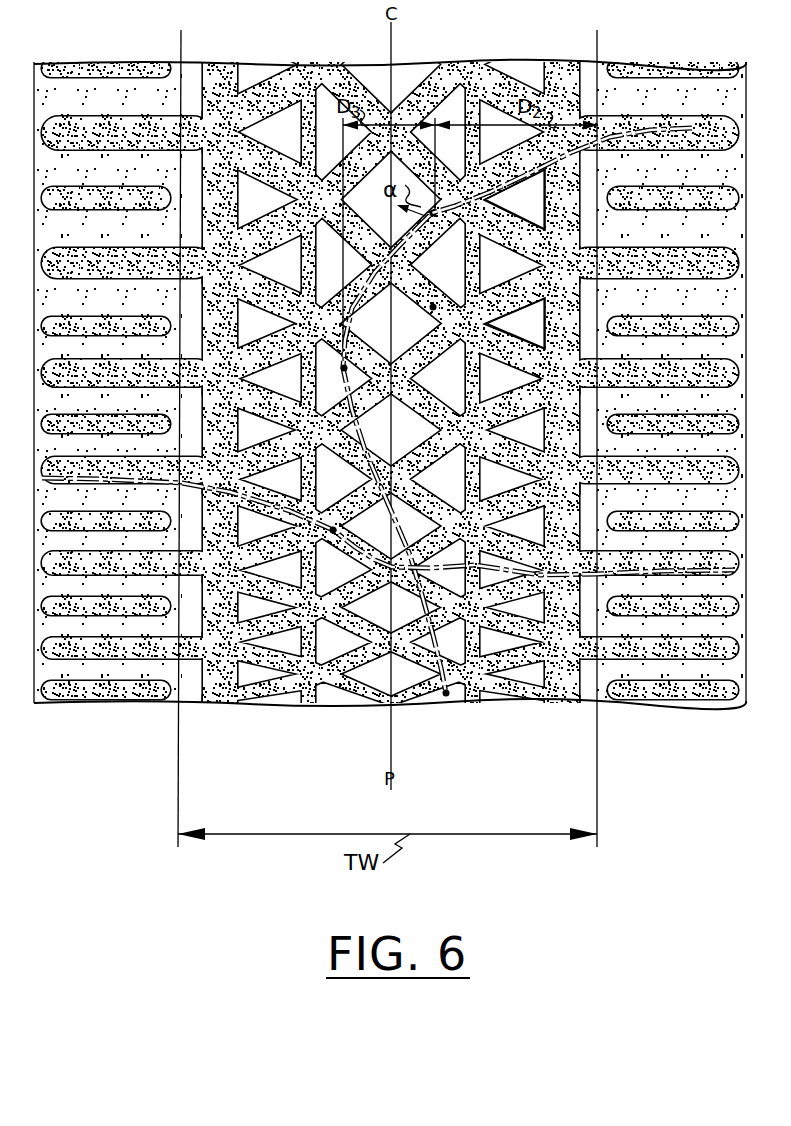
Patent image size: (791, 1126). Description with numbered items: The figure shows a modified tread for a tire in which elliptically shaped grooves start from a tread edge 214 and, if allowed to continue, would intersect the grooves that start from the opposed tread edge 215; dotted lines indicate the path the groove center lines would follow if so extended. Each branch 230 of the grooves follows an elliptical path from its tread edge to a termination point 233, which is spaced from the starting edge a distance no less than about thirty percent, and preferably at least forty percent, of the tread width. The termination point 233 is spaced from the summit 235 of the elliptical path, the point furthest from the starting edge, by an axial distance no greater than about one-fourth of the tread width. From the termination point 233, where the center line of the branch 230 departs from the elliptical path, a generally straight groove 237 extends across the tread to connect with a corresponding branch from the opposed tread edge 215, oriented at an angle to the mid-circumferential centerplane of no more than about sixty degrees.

The tread edge 214 is at (166, 642).
The opposed tread edge 215 is at (604, 703).
The branches of the grooves 230 is at (539, 238).
The termination point 233 is at (433, 307).
The summit of the elliptical path 235 is at (341, 369).
The groove 237 is at (388, 410).